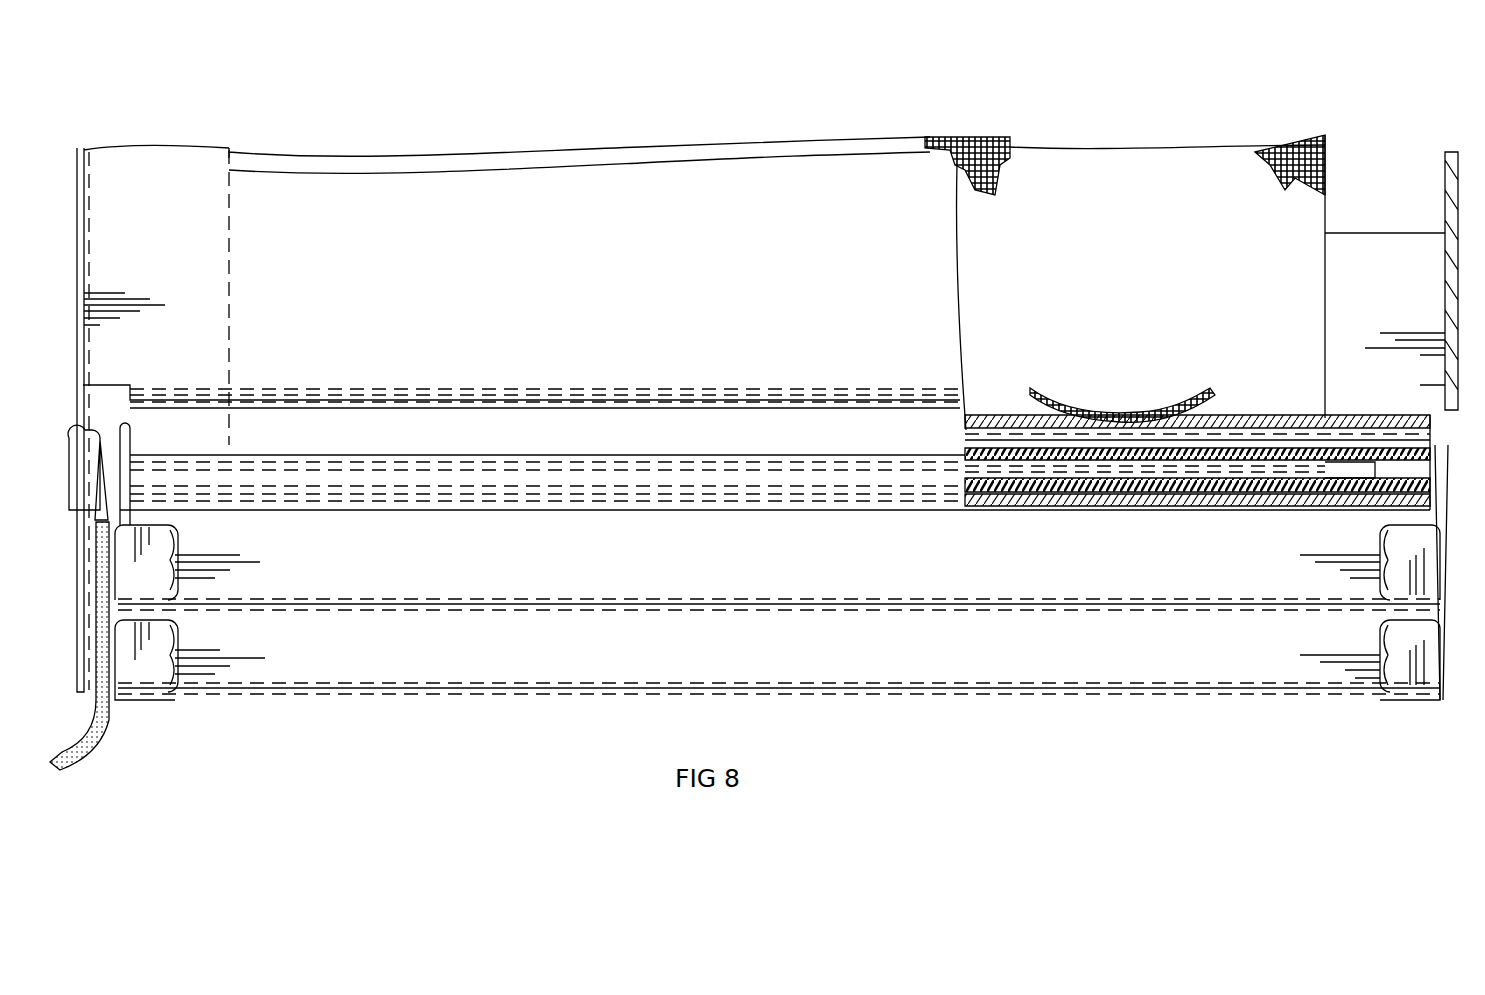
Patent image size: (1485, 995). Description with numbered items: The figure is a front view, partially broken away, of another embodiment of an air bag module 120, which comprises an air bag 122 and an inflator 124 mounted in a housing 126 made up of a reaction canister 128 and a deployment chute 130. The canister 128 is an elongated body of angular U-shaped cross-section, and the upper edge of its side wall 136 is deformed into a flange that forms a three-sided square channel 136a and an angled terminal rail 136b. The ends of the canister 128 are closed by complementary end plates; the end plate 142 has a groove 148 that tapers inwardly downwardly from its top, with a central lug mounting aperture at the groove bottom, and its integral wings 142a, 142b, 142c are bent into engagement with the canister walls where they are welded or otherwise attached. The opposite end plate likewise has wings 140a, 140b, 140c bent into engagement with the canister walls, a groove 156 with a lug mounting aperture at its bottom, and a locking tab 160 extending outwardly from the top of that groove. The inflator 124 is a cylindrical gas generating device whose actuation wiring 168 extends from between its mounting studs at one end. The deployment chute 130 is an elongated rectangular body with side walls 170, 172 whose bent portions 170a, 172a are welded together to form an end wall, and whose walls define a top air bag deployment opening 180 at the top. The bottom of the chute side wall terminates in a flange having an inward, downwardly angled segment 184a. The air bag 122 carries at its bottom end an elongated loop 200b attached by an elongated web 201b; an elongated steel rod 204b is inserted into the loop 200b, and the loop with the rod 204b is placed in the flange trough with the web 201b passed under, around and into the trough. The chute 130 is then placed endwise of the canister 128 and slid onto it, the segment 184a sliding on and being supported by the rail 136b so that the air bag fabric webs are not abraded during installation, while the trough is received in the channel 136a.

The air bag module 120 is at (344, 710).
The air bag 122 is at (1245, 165).
The inflator 124 is at (128, 425).
The housing 126 is at (1150, 700).
The reaction canister 128 is at (598, 665).
The deployment chute 130 is at (175, 170).
The side wall 136 is at (845, 575).
The three-sided square channel 136a is at (595, 485).
The angled terminal rail 136b is at (427, 420).
The wing 140a is at (160, 540).
The wing 140b is at (160, 625).
The wing 140c is at (145, 700).
The end plate 142 is at (1452, 335).
The wing 142a is at (1405, 545).
The wing 142b is at (1400, 632).
The wing 142c is at (1410, 705).
The groove 148 is at (1435, 440).
The groove 156 is at (120, 505).
The locking tab 160 is at (72, 468).
The actuation wiring 168 is at (105, 740).
The side wall 170 is at (636, 185).
The side wall portion 170a is at (1447, 250).
The side wall 172 is at (1347, 255).
The side wall portion 172a is at (1452, 200).
The top air bag deployment opening 180 is at (1358, 135).
The inward, downwardly angled segment 184a is at (996, 415).
The elongated loop 200b is at (1035, 495).
The elongated web 201b is at (1205, 500).
The elongated steel rod 204b is at (1130, 470).